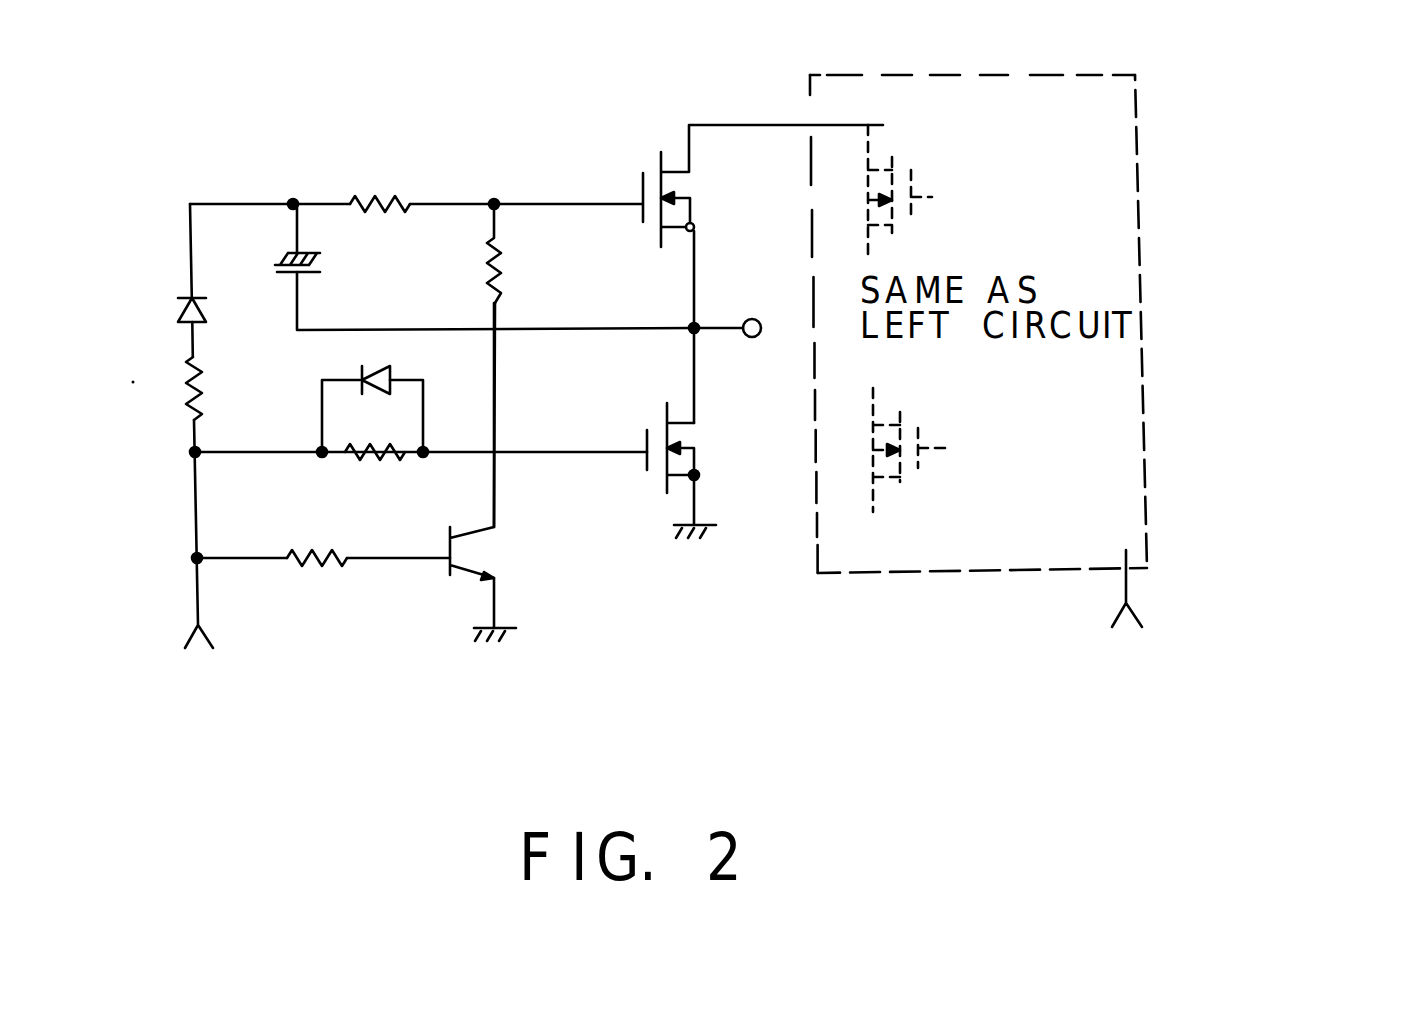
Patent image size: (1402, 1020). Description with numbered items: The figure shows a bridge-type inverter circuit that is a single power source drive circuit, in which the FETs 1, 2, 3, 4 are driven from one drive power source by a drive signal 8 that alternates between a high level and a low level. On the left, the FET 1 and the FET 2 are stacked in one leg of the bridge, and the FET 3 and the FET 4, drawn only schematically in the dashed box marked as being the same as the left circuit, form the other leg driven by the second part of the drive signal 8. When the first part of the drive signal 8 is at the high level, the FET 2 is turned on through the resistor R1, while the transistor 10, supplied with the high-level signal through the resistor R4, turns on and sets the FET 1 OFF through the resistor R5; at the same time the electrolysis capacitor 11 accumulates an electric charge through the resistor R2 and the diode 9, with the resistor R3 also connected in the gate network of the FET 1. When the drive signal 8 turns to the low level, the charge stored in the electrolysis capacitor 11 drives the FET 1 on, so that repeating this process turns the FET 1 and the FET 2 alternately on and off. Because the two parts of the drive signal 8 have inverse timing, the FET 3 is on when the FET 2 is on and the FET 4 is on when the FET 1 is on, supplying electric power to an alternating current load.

The FET 1 is at (705, 199).
The FET 2 is at (708, 440).
The FET 3 is at (932, 197).
The FET 4 is at (950, 448).
The drive signal 8 is at (731, 626).
The diode 9 is at (162, 318).
The transistor 10 is at (503, 553).
The electrolysis capacitor 11 is at (387, 280).
The resistor R1 is at (372, 440).
The resistor R2 is at (212, 383).
The resistor R3 is at (386, 189).
The resistor R4 is at (325, 570).
The resistor R5 is at (512, 267).